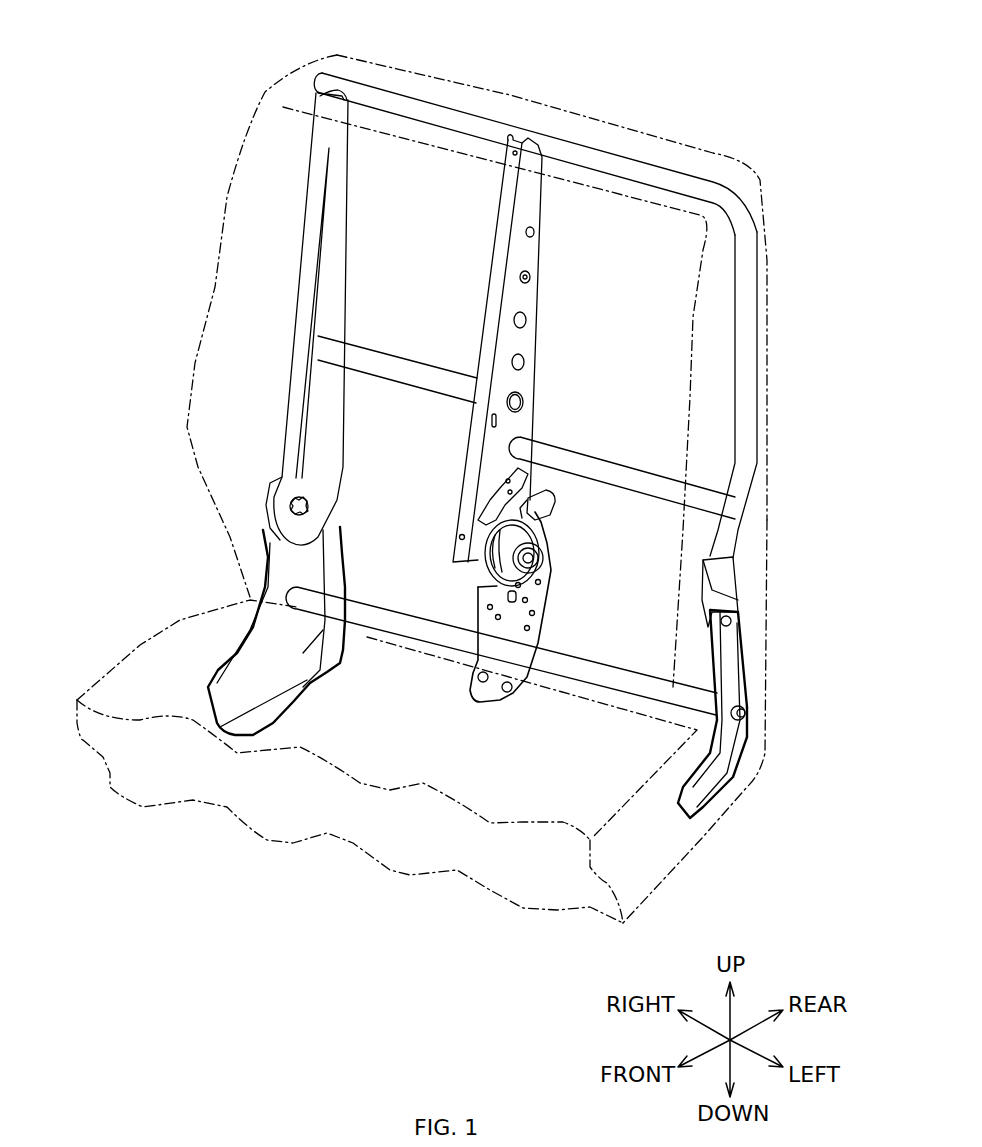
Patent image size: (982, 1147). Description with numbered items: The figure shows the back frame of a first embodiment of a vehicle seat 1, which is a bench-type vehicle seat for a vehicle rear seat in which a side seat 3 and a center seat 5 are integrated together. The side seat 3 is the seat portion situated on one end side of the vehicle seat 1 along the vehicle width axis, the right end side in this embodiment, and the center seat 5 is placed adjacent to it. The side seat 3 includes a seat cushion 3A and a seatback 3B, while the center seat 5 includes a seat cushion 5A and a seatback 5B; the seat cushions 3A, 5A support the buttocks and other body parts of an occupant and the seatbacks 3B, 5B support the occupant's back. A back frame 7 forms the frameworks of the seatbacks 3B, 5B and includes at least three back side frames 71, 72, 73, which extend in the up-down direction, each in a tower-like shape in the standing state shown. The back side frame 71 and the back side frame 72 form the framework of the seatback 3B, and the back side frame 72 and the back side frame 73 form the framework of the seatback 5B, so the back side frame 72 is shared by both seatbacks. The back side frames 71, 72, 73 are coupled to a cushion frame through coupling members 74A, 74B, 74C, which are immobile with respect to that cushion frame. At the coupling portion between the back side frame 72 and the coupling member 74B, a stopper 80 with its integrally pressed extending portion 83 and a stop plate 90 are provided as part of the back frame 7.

The vehicle seat 1 is at (160, 91).
The side seat 3 is at (237, 295).
The seat cushion 3A is at (153, 673).
The seatback 3B is at (380, 212).
The center seat 5 is at (710, 353).
The seat cushion 5A is at (587, 790).
The seatback 5B is at (643, 423).
The back frame 7 is at (618, 154).
The back side frame 71 is at (337, 272).
The back side frame 72 is at (523, 252).
The back side frame 73 is at (757, 277).
The coupling member 74A is at (330, 563).
The coupling member 74B is at (547, 573).
The coupling member 74C is at (735, 667).
The stopper 80 is at (530, 490).
The extending portion 83 is at (487, 510).
The stop plate 90 is at (537, 530).